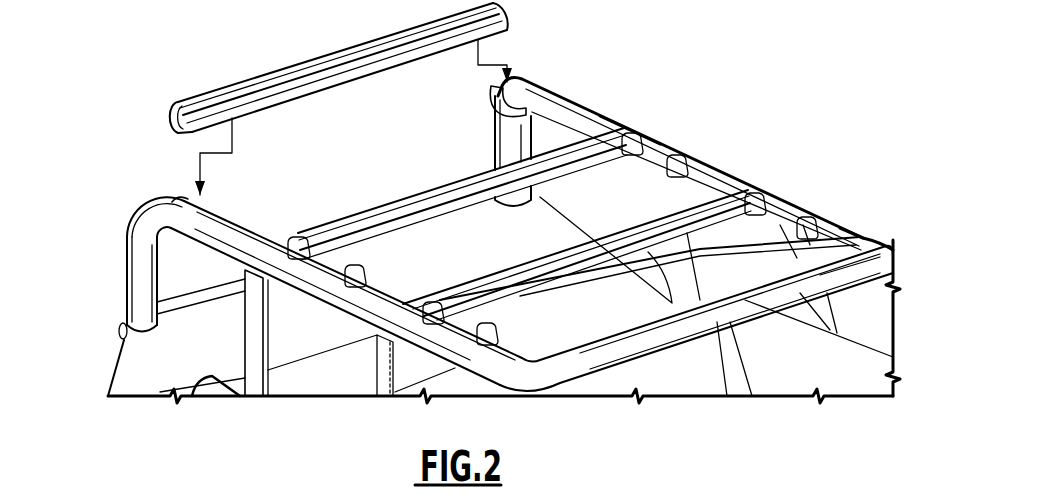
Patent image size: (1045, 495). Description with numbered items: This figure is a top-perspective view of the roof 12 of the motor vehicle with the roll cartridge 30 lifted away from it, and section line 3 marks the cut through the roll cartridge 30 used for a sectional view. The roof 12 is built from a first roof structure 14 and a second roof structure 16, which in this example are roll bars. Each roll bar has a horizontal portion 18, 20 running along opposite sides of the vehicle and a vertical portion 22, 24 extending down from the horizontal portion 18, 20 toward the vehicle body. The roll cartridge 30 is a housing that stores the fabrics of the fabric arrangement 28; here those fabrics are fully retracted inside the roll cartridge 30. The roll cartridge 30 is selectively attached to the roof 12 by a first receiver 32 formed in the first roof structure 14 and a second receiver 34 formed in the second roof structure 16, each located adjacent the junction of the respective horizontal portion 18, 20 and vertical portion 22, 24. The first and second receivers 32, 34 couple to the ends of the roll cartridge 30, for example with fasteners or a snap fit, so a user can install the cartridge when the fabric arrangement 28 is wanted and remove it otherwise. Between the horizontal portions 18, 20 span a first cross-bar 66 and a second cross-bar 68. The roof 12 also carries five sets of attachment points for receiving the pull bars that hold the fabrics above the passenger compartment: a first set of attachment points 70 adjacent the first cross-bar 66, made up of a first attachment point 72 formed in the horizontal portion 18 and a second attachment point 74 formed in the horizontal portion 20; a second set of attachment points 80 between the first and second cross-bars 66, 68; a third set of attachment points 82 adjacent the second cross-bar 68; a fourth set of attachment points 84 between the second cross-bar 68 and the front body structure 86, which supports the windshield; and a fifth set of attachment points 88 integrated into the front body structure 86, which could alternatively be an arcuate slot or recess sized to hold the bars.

The section line 3- 3 is at (332, 23).
The roof 12 is at (590, 86).
The first roof structure 14 is at (128, 196).
The second roof structure 16 is at (550, 75).
The horizontal portion 18 is at (247, 248).
The horizontal portion 20 is at (737, 170).
The vertical portion 22 is at (127, 290).
The vertical portion 24 is at (500, 147).
The fabric arrangement 28 is at (118, 116).
The roll cartridge 30 is at (196, 76).
The first receiver 32 is at (200, 196).
The second receiver 34 is at (485, 108).
The first cross-bar 66 is at (561, 168).
The second cross-bar 68 is at (620, 237).
The first set of attachment points 70 is at (635, 112).
The first attachment point 72 is at (297, 239).
The second attachment point 74 is at (640, 143).
The second set of attachment points 80 is at (700, 147).
The third set of attachment points 82 is at (770, 185).
The fourth set of attachment points 84 is at (818, 205).
The front body structure 86 is at (858, 262).
The fifth set of attachment points 88 is at (864, 231).